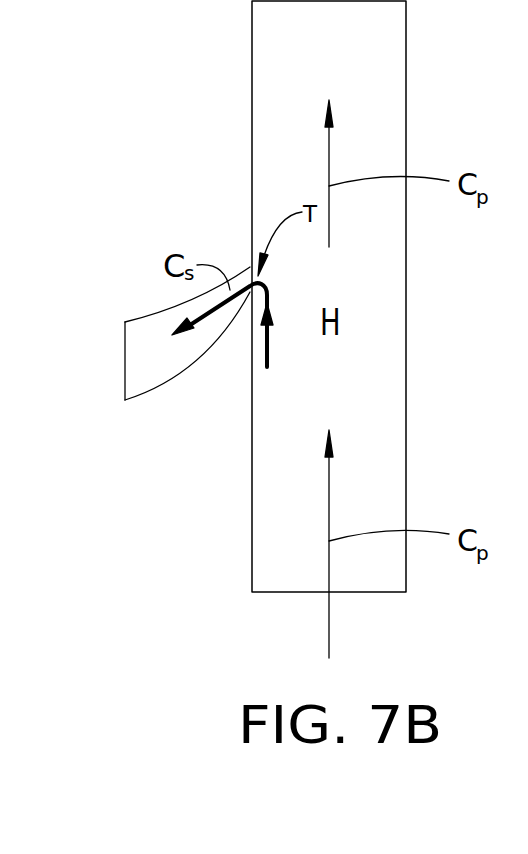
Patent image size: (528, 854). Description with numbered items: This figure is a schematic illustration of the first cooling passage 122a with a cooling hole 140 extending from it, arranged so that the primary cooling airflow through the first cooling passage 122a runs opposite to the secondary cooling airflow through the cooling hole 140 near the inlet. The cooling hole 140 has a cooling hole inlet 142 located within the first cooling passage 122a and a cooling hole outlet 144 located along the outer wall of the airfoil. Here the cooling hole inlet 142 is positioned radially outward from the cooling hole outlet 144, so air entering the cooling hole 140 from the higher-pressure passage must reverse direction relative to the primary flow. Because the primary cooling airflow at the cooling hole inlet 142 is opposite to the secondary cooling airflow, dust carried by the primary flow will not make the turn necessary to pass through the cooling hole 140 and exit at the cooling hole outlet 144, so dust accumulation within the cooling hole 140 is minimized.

The first cooling passage 122a is at (387, 87).
The cooling hole 140 is at (157, 390).
The cooling hole inlet 142 is at (250, 270).
The cooling hole outlet 144 is at (125, 346).